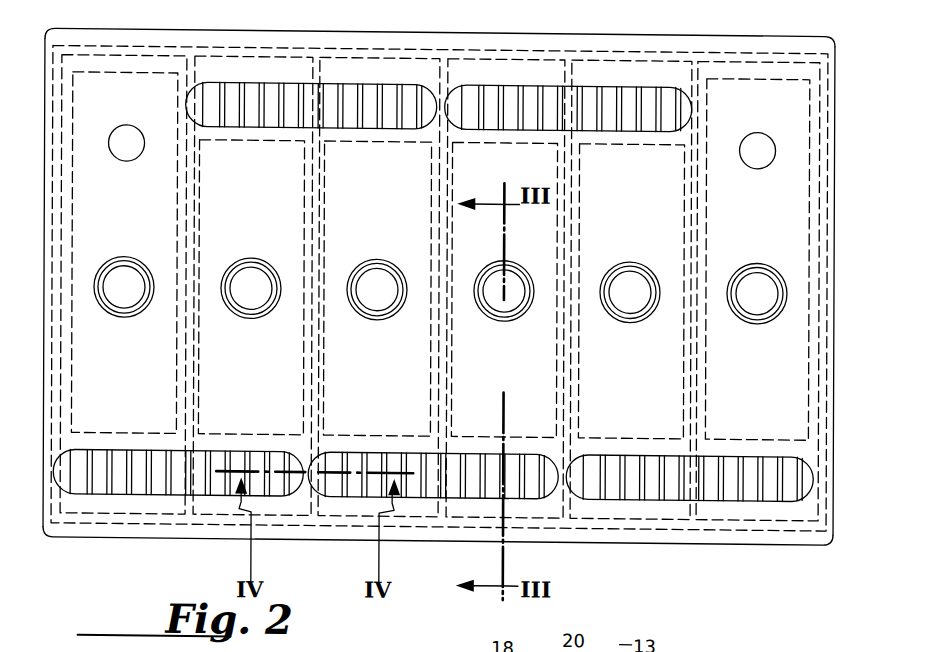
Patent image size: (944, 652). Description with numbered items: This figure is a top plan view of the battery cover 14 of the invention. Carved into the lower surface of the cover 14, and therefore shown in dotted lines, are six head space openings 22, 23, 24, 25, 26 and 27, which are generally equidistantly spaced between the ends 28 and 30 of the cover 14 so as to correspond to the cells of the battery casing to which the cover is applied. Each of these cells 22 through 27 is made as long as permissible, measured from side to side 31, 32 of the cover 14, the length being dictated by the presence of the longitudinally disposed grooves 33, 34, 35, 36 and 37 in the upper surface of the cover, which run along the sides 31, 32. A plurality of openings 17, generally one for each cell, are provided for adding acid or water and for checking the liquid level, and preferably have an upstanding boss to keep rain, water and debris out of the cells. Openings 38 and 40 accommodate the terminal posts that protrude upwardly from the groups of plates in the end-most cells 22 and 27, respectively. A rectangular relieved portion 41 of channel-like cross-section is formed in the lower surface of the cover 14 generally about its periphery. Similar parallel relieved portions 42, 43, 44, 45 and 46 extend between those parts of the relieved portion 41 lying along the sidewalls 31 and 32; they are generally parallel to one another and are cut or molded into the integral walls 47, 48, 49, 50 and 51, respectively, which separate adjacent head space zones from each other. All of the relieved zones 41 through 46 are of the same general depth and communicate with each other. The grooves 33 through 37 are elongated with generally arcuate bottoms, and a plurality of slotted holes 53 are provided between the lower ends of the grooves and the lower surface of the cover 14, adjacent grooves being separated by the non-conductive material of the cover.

The cover 14 is at (437, 309).
The opening 17 is at (125, 293).
The head space opening 22 is at (123, 284).
The head space opening 23 is at (253, 285).
The head space opening 24 is at (379, 286).
The head space opening 25 is at (505, 288).
The head space opening 26 is at (631, 289).
The head space opening 27 is at (758, 290).
The end 28 is at (44, 519).
The end 30 is at (837, 522).
The side 31 is at (205, 536).
The side 32 is at (233, 30).
The longitudinally disposed groove 33 is at (163, 494).
The longitudinally disposed groove 34 is at (352, 81).
The longitudinally disposed groove 35 is at (355, 492).
The longitudinally disposed groove 36 is at (525, 80).
The longitudinally disposed groove 37 is at (690, 491).
The opening 38 is at (115, 128).
The opening 40 is at (747, 131).
The relieved portion 41 is at (668, 48).
The relieved portion 42 is at (203, 218).
The relieved portion 43 is at (328, 197).
The relieved portion 44 is at (448, 179).
The relieved portion 45 is at (575, 188).
The relieved portion 46 is at (700, 213).
The integral wall 47 is at (200, 330).
The integral wall 48 is at (330, 329).
The integral wall 49 is at (453, 339).
The integral wall 50 is at (580, 340).
The integral wall 51 is at (710, 336).
The slotted hole 53 is at (640, 448).